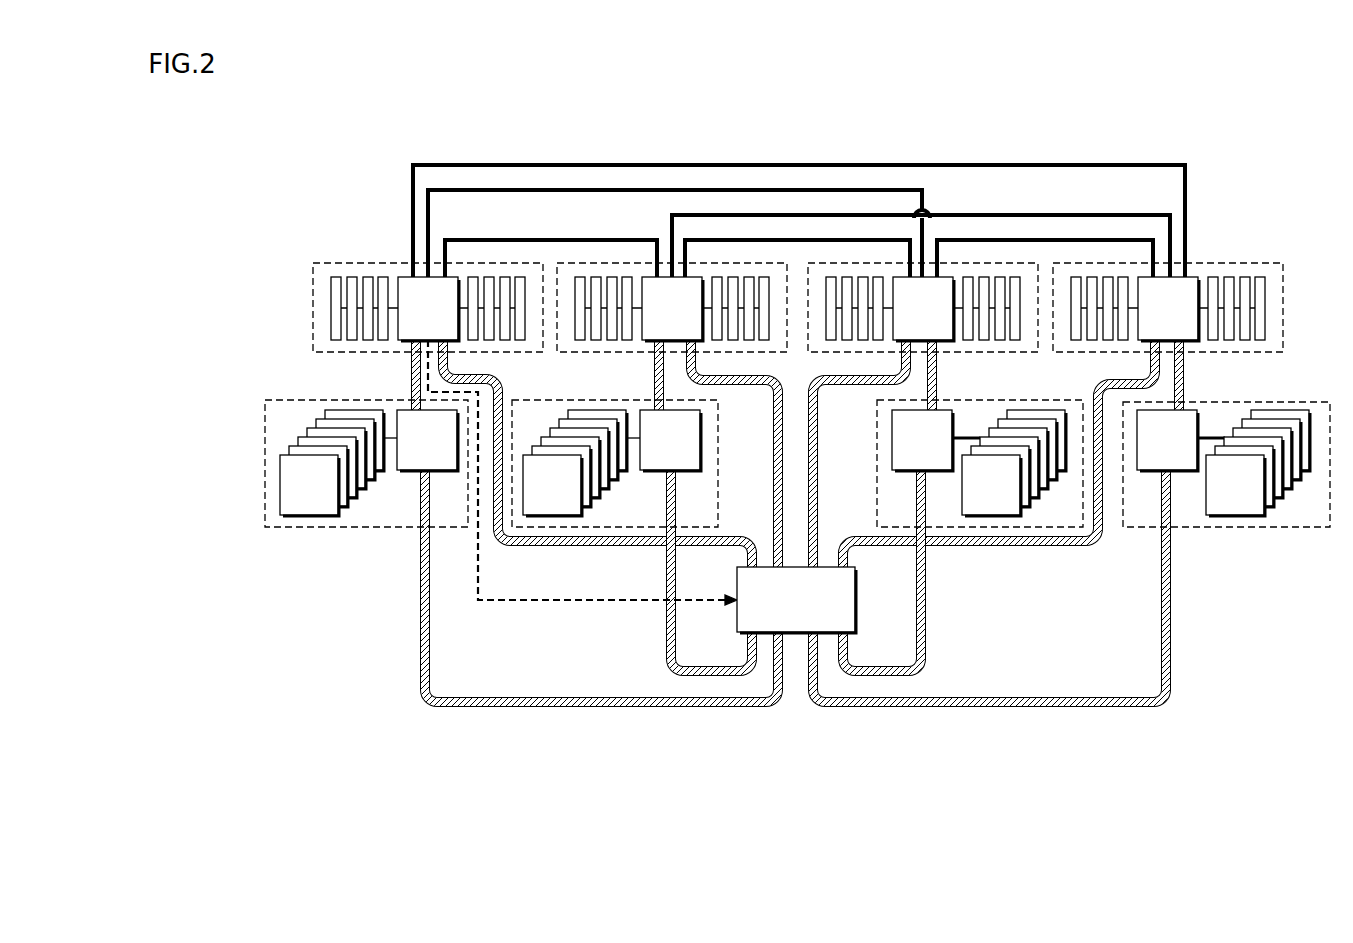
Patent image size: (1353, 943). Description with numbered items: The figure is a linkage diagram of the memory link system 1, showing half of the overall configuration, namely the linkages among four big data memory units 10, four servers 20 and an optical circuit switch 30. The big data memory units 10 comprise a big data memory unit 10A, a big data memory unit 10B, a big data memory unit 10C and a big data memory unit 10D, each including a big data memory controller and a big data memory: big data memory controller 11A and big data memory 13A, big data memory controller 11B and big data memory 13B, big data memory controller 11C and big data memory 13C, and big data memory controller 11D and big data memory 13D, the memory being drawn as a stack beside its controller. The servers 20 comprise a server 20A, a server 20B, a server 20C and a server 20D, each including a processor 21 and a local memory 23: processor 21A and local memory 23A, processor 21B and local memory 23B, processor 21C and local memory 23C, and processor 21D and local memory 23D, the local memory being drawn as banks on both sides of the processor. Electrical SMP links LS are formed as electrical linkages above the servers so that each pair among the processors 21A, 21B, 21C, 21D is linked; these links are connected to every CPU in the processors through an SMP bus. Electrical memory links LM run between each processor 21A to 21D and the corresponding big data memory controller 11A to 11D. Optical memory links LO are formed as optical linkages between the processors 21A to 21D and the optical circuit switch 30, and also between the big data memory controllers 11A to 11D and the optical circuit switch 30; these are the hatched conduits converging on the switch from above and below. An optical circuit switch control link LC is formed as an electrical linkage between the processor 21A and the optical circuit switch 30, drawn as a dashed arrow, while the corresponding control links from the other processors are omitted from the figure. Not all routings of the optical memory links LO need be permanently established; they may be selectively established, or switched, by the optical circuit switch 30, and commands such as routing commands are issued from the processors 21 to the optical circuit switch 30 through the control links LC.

The memory link system 1 is at (1283, 147).
The big data memory unit 10 is at (334, 494).
The big data memory unit 10A is at (262, 490).
The big data memory unit 10B is at (628, 528).
The big data memory unit 10C is at (1055, 528).
The big data memory unit 10D is at (1300, 528).
The big data memory controller 11A is at (413, 473).
The big data memory controller 11B is at (700, 457).
The big data memory controller 11C is at (892, 457).
The big data memory controller 11D is at (1150, 473).
The big data memory 13A is at (310, 518).
The big data memory 13B is at (548, 520).
The big data memory 13C is at (988, 520).
The big data memory 13D is at (1230, 518).
The server 20 is at (384, 306).
The server 20A is at (313, 290).
The server 20B is at (722, 263).
The server 20C is at (978, 263).
The server 20D is at (1238, 263).
The processor 21 is at (410, 255).
The processor 21A is at (405, 277).
The processor 21B is at (645, 277).
The processor 21C is at (898, 277).
The processor 21D is at (1140, 277).
The local memory 23 is at (408, 254).
The local memory 23A is at (352, 277).
The local memory 23B is at (598, 277).
The local memory 23C is at (848, 277).
The local memory 23D is at (1093, 277).
The optical circuit switch 30 is at (857, 622).
The electrical SMP link LS is at (468, 163).
The electrical memory link LM is at (410, 373).
The optical memory link LO is at (1082, 708).
The optical circuit switch control link LC is at (516, 603).